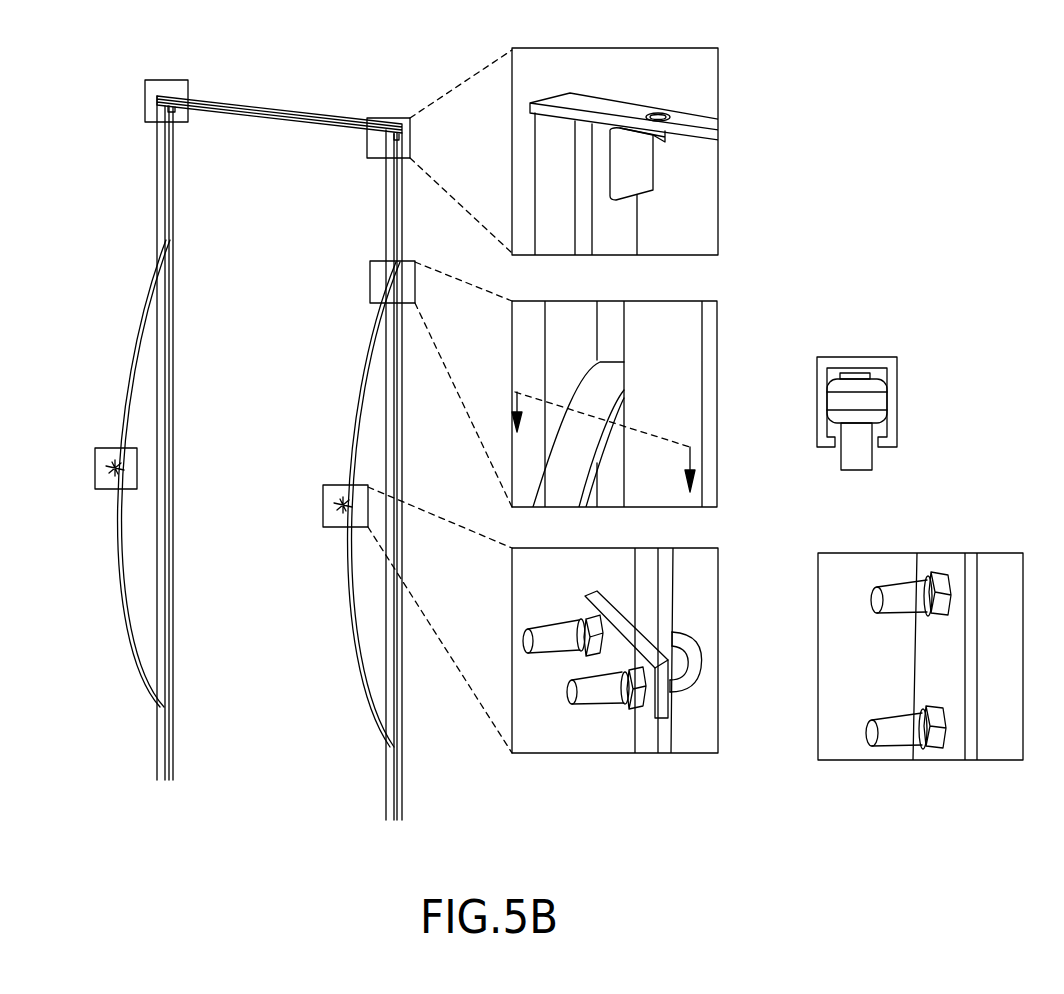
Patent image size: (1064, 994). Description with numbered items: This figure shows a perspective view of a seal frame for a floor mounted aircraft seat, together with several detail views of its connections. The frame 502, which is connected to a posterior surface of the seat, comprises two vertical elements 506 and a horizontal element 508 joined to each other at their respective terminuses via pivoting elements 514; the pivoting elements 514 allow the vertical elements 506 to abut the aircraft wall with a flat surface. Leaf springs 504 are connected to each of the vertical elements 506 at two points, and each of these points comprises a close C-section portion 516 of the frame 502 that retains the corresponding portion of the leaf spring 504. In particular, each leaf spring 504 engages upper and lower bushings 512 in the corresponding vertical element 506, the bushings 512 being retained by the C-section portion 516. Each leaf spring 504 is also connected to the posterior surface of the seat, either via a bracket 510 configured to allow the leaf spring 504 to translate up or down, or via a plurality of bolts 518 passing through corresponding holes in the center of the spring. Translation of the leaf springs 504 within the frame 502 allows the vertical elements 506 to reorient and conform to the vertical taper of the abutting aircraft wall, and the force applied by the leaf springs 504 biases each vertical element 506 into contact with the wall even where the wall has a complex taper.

The frame 502 is at (115, 74).
The leaf spring 504 is at (130, 355).
The vertical element 506 is at (168, 165).
The horizontal element 508 is at (276, 103).
The bracket 510 is at (688, 670).
The bushing 512 is at (855, 403).
The pivoting element 514 is at (638, 162).
The C-section portion 516 is at (840, 363).
The bolt 518 is at (902, 595).